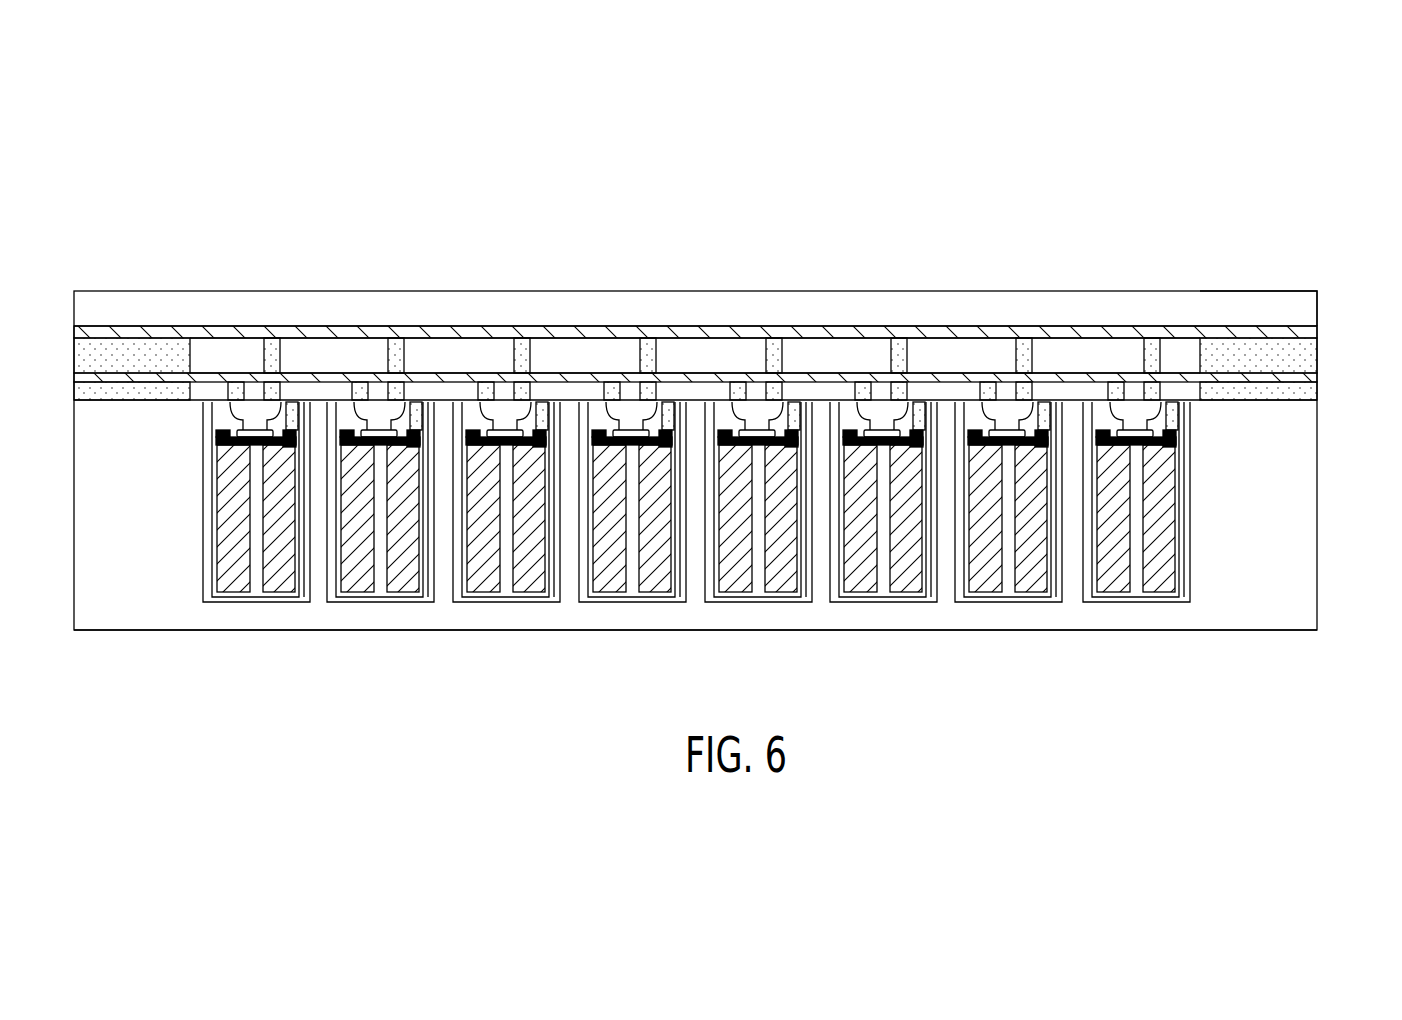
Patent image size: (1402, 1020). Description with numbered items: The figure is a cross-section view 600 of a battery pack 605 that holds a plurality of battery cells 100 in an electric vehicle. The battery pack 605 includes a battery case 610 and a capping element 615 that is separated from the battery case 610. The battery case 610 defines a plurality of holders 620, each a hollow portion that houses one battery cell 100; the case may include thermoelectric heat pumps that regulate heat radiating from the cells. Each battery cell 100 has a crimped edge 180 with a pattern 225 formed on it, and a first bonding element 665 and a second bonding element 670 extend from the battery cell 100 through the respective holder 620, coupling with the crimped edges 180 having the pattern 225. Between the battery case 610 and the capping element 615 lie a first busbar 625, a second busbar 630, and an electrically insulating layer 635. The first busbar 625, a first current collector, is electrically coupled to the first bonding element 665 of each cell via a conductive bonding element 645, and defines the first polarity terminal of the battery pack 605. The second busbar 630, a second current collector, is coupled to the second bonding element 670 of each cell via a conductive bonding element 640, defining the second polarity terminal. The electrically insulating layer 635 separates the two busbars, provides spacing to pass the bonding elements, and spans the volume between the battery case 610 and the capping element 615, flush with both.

The cross-section view 600 is at (668, 172).
The battery pack 605 is at (1055, 287).
The capping element 615 is at (1283, 318).
The first busbar 625 is at (1320, 332).
The electrically insulating layer 635 is at (150, 362).
The second busbar 630 is at (1320, 377).
The bonding element 640 is at (235, 372).
The bonding element 645 is at (270, 347).
The battery case 610 is at (1280, 498).
The holder 620 is at (303, 605).
The battery cell 100 is at (258, 605).
The pattern 225 is at (287, 432).
The crimped edge 180 is at (293, 438).
The first bonding element 665 is at (233, 416).
The second bonding element 670 is at (280, 419).